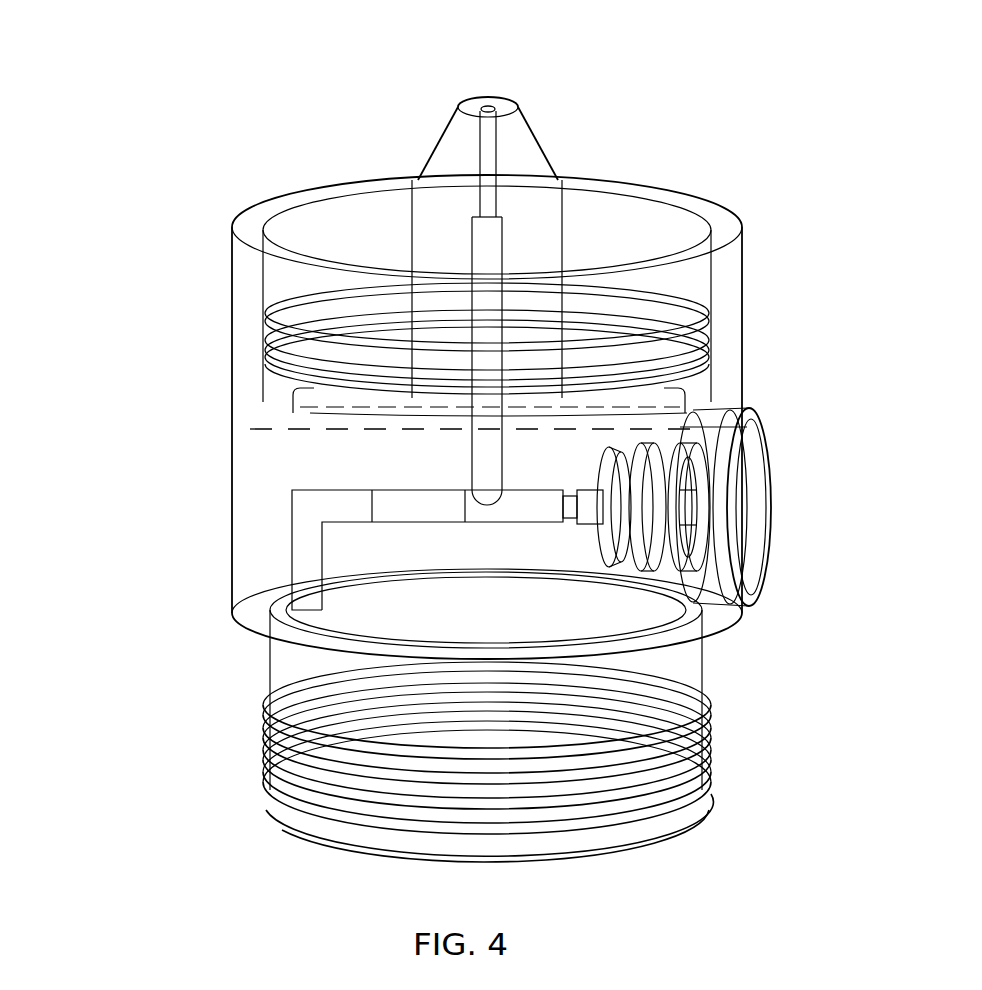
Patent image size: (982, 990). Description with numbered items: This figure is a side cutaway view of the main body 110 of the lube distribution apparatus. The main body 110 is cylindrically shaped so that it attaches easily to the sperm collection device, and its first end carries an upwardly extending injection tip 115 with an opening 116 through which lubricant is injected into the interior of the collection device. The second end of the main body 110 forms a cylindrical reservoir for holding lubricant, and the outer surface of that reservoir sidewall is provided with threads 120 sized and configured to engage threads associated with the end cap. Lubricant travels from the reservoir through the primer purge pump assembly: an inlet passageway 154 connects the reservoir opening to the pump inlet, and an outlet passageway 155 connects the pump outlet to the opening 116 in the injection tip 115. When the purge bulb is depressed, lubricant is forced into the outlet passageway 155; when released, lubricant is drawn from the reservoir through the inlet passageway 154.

The main body 110 is at (168, 155).
The injection tip 115 is at (528, 150).
The opening 116 is at (488, 104).
The threads 120 is at (715, 748).
The inlet passageway 154 is at (303, 536).
The outlet passageway 155 is at (482, 436).